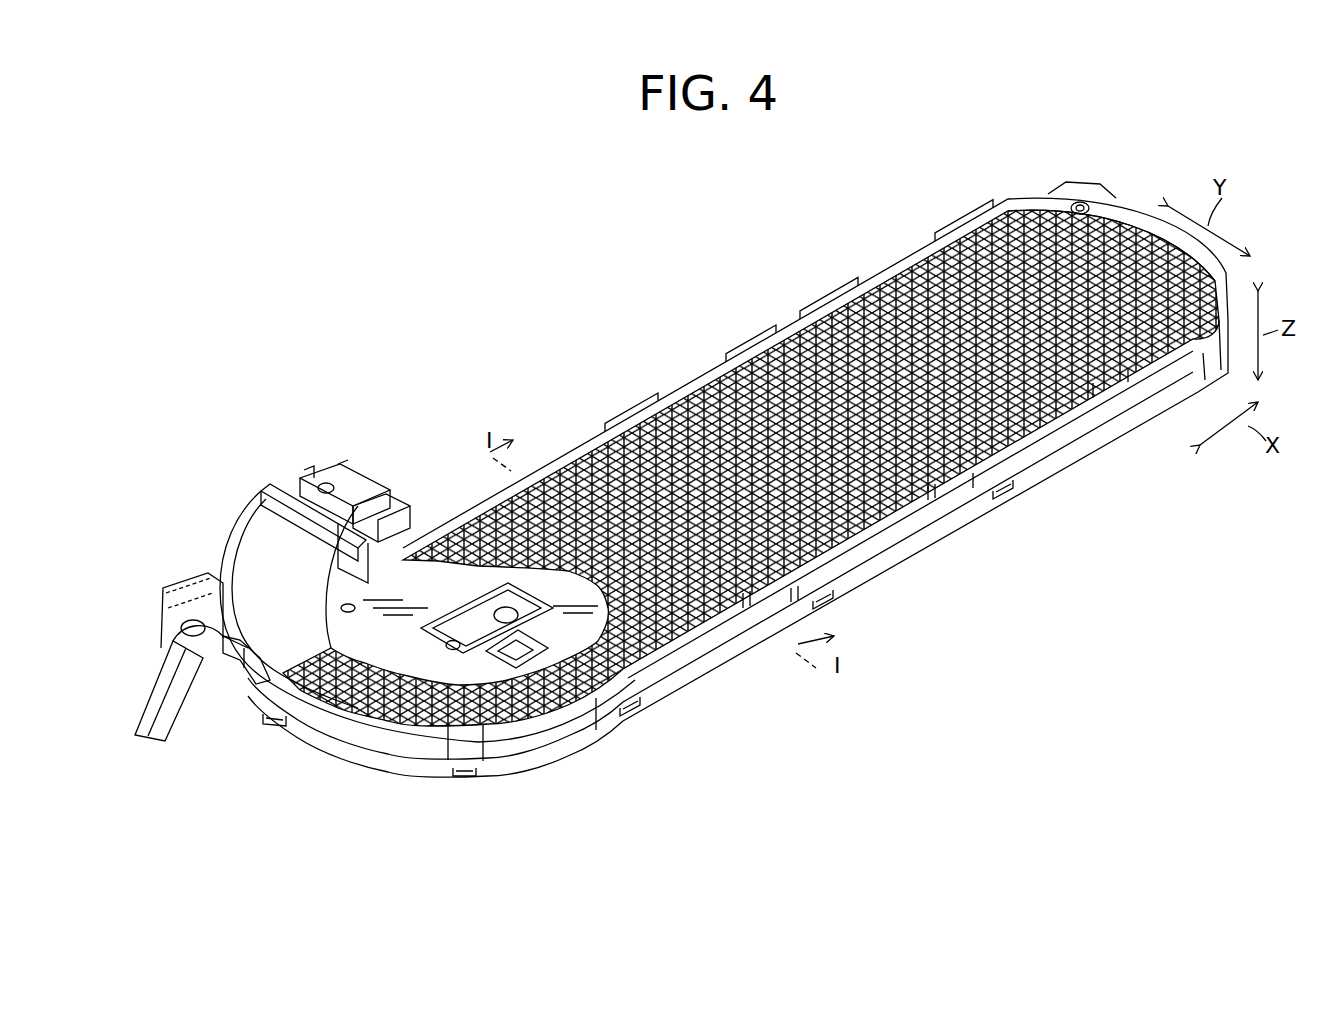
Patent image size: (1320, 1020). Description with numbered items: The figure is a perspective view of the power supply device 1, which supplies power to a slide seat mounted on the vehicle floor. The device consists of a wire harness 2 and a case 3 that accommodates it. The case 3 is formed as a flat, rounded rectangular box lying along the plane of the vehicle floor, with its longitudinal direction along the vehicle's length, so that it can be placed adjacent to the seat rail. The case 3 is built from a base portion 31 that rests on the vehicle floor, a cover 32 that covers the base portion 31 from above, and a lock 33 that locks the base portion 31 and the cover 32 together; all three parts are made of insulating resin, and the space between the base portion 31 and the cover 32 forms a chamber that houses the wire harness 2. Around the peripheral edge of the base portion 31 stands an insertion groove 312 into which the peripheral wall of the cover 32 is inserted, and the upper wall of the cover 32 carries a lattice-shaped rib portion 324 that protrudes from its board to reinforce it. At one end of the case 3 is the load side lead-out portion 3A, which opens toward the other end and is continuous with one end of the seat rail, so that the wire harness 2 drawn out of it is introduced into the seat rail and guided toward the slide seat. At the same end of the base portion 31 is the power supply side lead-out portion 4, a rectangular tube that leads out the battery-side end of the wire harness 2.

The power supply device 1 is at (727, 238).
The wire harness 2 is at (162, 685).
The case 3 is at (1165, 410).
The load side lead-out portion 3A is at (355, 468).
The power supply side lead-out portion 4 is at (197, 675).
The base portion 31 is at (1035, 460).
The cover 32 is at (1062, 418).
The lock 33 is at (993, 485).
The insertion groove 312 is at (1102, 385).
The lattice-shaped rib portion 324 is at (885, 515).